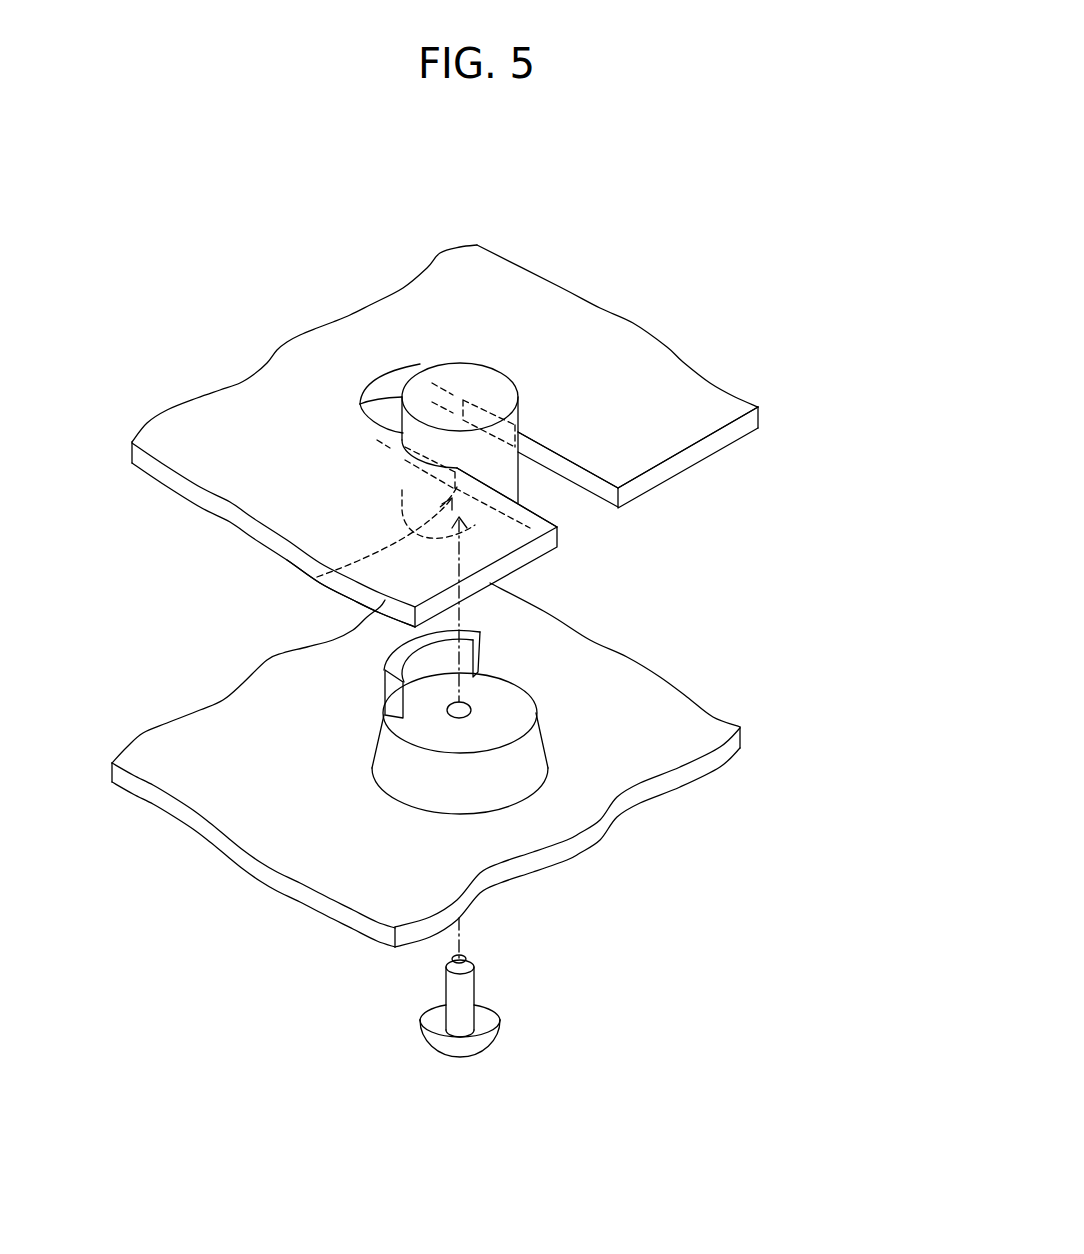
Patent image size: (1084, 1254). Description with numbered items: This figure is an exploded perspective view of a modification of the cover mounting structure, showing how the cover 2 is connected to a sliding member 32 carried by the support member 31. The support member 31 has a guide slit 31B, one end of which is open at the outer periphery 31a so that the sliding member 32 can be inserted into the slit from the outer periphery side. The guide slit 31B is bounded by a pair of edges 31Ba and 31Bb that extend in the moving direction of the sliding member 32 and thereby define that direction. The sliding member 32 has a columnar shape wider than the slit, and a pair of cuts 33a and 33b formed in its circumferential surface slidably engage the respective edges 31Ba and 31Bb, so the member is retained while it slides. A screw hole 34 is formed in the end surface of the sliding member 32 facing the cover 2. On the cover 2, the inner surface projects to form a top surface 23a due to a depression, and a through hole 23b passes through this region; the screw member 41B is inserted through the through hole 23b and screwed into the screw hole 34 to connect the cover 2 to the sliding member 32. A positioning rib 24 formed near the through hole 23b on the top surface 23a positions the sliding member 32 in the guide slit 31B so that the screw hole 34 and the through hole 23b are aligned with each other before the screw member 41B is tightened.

The cover 2 is at (263, 820).
The top surface 23a is at (506, 713).
The through hole 23b is at (462, 707).
The positioning rib 24 is at (395, 672).
The support member 31 is at (470, 283).
The outer periphery 31a is at (738, 431).
The guide slit 31B is at (542, 456).
The edge 31Ba is at (518, 505).
The edge 31Bb is at (573, 477).
The sliding member 32 is at (452, 380).
The cut 33a is at (406, 465).
The cut 33b is at (497, 405).
The screw hole 34 is at (322, 576).
The screw member 41B is at (467, 990).